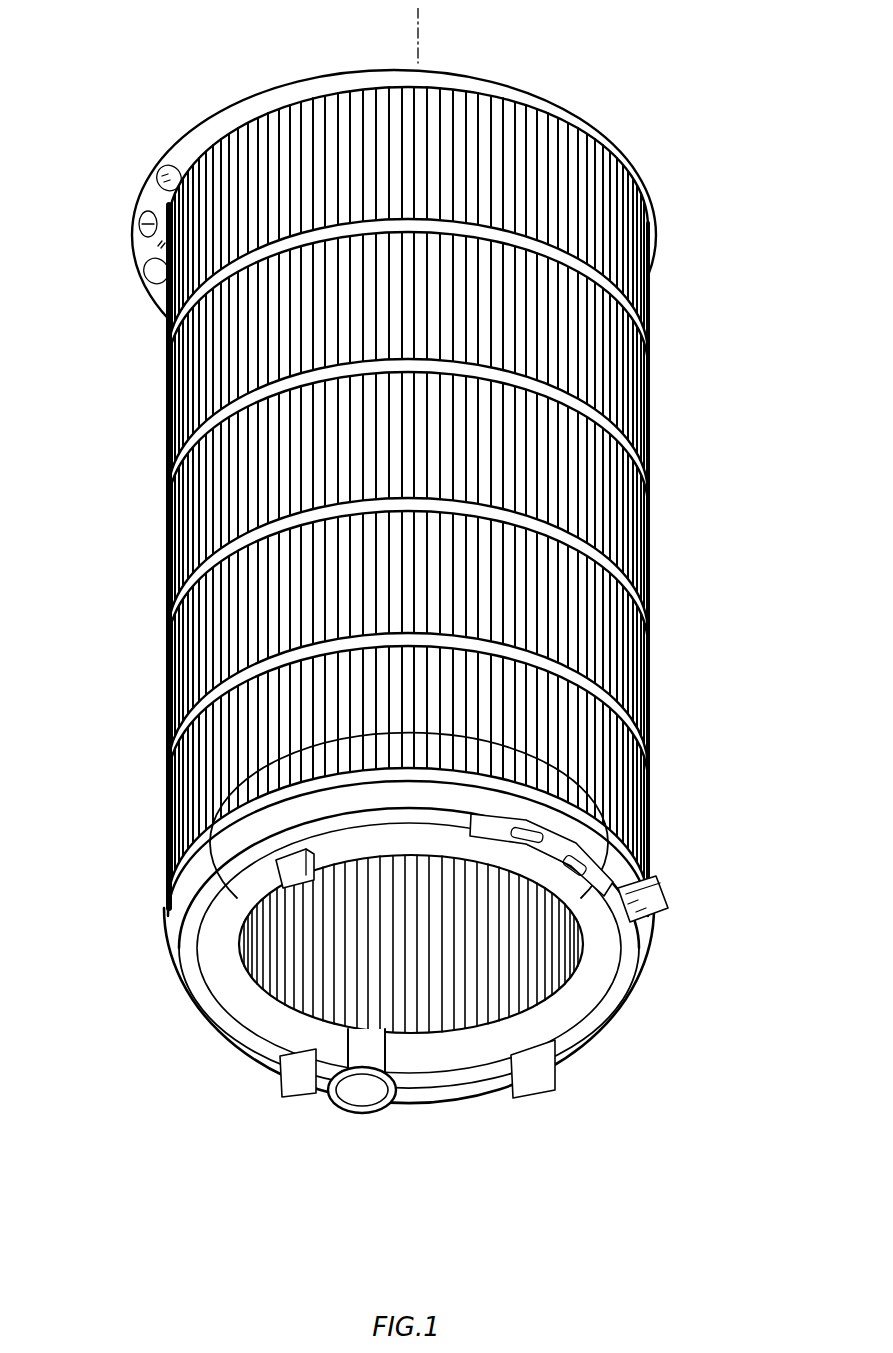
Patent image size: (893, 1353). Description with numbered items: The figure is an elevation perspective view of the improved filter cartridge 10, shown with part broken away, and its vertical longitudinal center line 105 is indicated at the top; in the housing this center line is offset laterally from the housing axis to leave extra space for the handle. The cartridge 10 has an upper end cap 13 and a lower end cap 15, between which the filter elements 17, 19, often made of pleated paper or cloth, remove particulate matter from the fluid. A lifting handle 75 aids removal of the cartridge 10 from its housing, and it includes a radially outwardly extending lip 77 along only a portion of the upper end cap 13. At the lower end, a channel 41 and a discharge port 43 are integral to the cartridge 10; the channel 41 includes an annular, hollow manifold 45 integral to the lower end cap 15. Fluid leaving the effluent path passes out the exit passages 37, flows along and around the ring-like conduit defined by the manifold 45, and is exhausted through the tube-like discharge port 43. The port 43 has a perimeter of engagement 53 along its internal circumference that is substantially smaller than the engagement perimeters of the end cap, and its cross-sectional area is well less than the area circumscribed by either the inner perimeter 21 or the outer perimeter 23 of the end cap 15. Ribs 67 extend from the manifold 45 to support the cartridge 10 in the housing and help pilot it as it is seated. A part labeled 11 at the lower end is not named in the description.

The filter cartridge 10 is at (674, 560).
The end cap assembly 11 is at (536, 1117).
The upper end cap 13 is at (605, 135).
The lower end cap 15 is at (650, 868).
The filter element 17 is at (413, 965).
The filter element 19 is at (593, 643).
The inner perimeter 21 is at (231, 1040).
The outer perimeter 23 is at (655, 897).
The exit passages 37 is at (571, 842).
The channel 41 is at (648, 1003).
The discharge port 43 is at (371, 1107).
The manifold 45 is at (628, 942).
The perimeter of engagement 53 is at (345, 1107).
The ribs 67 is at (213, 910).
The lifting handle 75 is at (190, 148).
The lip 77 is at (133, 180).
The vertical longitudinal center line 105 is at (410, 37).